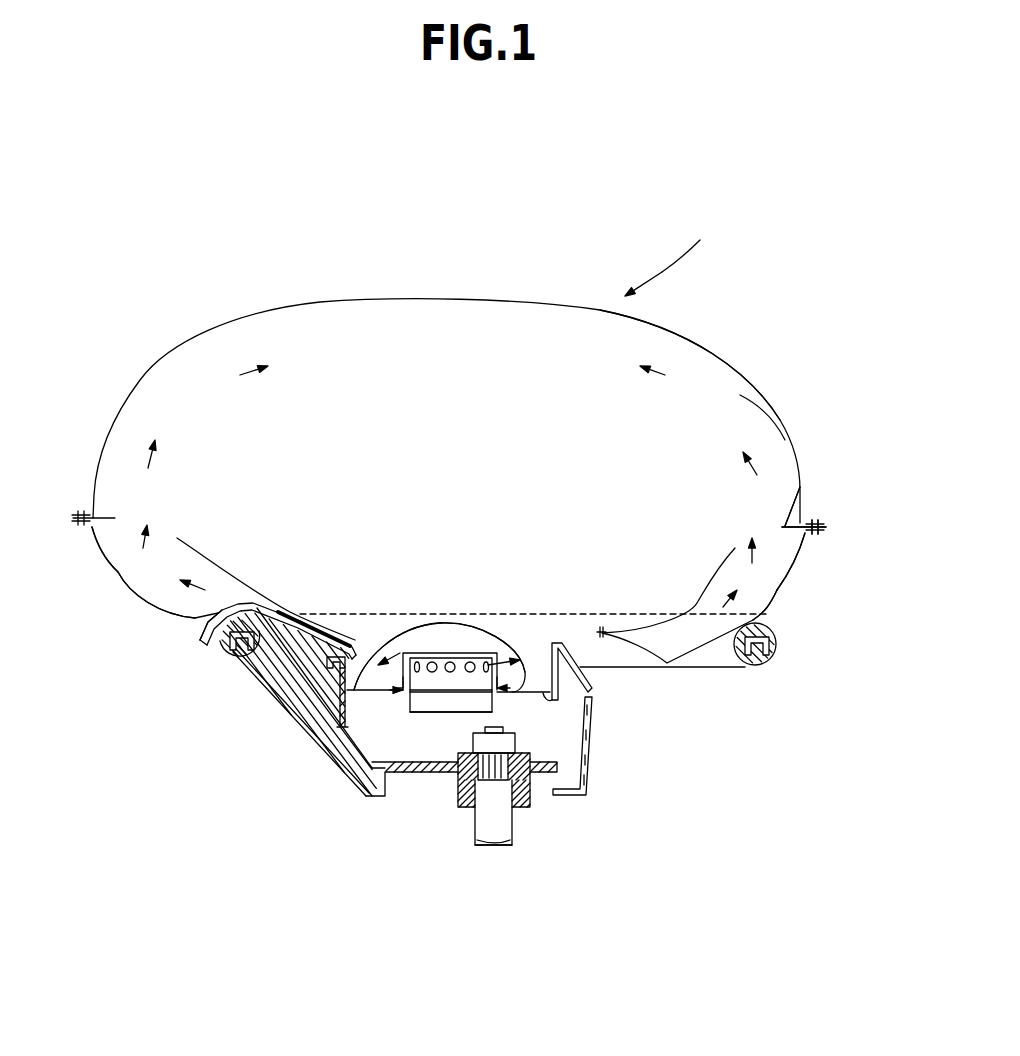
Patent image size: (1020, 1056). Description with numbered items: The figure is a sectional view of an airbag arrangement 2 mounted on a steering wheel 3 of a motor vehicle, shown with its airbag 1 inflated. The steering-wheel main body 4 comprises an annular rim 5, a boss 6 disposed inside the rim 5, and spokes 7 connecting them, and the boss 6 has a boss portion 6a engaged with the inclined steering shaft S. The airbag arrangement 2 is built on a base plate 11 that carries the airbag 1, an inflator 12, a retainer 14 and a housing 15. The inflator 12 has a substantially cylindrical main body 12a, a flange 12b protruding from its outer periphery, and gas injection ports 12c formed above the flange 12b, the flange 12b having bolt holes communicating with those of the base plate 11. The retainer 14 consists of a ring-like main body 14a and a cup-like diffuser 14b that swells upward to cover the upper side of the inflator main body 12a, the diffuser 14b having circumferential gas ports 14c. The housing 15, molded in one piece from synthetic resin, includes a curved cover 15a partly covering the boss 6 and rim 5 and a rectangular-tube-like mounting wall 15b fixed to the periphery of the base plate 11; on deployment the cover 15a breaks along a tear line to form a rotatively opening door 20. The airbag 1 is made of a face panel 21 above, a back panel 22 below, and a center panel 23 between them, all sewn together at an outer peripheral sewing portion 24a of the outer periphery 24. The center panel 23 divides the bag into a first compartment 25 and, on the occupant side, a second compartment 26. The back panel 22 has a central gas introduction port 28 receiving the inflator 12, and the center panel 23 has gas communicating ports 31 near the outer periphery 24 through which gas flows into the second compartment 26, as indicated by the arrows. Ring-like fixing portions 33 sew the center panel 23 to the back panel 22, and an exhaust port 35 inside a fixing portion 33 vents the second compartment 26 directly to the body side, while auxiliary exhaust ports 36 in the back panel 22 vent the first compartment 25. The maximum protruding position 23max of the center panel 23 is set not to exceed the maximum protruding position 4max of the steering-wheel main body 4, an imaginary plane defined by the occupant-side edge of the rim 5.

The airbag 1 is at (667, 330).
The airbag arrangement 2 is at (673, 259).
The steering wheel 3 is at (438, 712).
The steering-wheel main body 4 is at (412, 693).
The rim 5 is at (772, 660).
The boss 6 is at (473, 748).
The boss portion 6a is at (517, 805).
The spokes 7 is at (297, 705).
The base plate 11 is at (340, 733).
The inflator 12 is at (478, 688).
The inflator main body 12a is at (452, 712).
The flange 12b is at (425, 712).
The gas injection ports 12c is at (470, 662).
The retainer 14 is at (408, 648).
The retainer main body 14a is at (362, 660).
The diffuser 14b is at (500, 628).
The gas ports 14c is at (392, 645).
The housing 15 is at (588, 730).
The cover 15a is at (200, 638).
The mounting wall 15b is at (310, 705).
The door 20 is at (205, 645).
The face panel 21 is at (722, 358).
The back panel 22 is at (738, 672).
The center panel 23 is at (803, 483).
The outer periphery 24 is at (815, 534).
The outer peripheral sewing portion 24a is at (822, 518).
The first compartment 25 is at (777, 570).
The second compartment 26 is at (743, 405).
The gas introduction port 28 is at (393, 691).
The gas communicating ports 31 is at (735, 548).
The fixing portions 33 is at (607, 634).
The exhaust port 35 is at (592, 643).
The auxiliary exhaust ports 36 is at (790, 612).
The steering shaft S is at (493, 838).
The maximum protruding position of the steering-wheel main body 4max is at (423, 622).
The maximum protruding position of the second compartment 23max is at (448, 620).